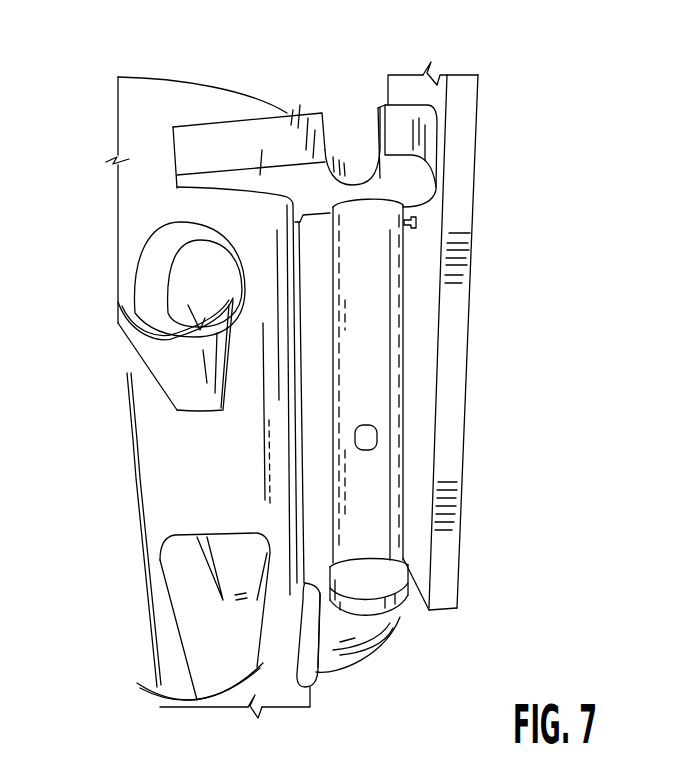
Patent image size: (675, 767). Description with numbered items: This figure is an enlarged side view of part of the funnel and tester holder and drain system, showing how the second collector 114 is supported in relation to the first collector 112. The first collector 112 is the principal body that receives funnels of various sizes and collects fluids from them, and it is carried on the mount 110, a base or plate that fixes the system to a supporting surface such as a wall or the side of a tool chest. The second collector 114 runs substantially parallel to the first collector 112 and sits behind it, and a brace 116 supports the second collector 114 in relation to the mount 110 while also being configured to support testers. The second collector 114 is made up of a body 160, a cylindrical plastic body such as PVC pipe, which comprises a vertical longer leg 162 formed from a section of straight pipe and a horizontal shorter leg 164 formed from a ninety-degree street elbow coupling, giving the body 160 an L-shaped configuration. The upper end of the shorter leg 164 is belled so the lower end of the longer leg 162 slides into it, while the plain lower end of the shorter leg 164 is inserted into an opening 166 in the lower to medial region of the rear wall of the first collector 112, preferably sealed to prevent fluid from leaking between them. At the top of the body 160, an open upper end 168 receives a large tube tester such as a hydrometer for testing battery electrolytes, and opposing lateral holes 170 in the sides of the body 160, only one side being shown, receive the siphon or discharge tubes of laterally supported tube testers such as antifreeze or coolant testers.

The mount 110 is at (467, 307).
The first collector 112 is at (153, 492).
The second collector 114 is at (392, 211).
The brace 116 is at (417, 134).
The body 160 is at (348, 252).
The longer leg 162 is at (385, 380).
The shorter leg 164 is at (375, 625).
The opening 166 is at (320, 657).
The open upper end 168 is at (356, 136).
The holes 170 is at (368, 437).